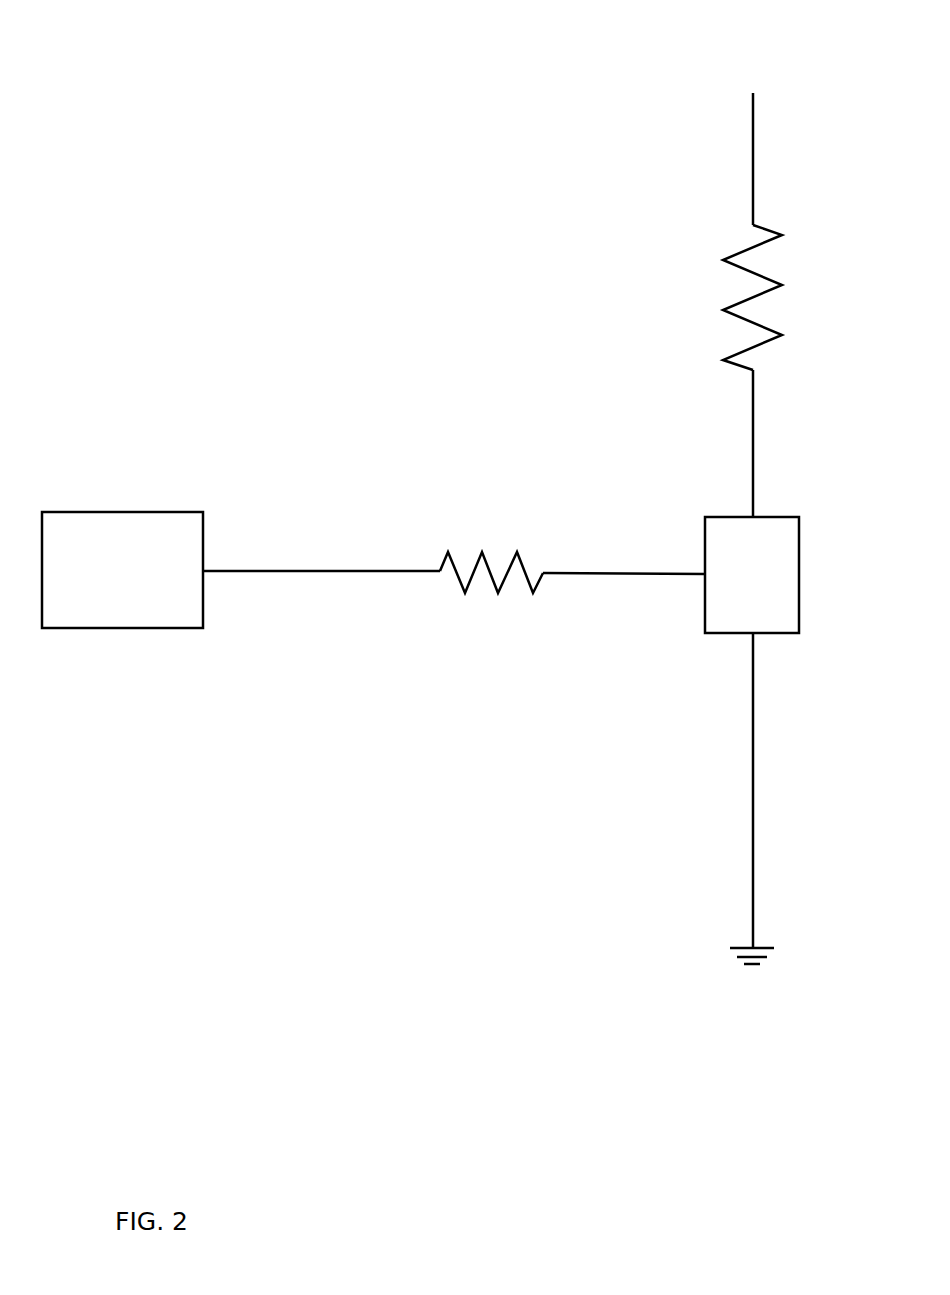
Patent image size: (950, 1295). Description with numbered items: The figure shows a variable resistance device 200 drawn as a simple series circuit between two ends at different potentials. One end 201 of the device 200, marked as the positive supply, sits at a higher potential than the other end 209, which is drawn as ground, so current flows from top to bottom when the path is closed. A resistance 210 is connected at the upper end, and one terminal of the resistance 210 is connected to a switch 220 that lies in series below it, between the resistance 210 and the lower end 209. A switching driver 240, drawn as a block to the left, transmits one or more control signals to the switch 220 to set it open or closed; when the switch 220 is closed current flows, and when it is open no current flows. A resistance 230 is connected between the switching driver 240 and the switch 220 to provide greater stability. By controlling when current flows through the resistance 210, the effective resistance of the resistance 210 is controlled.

The variable resistance device 200 is at (260, 152).
The end of device 201 is at (753, 93).
The another end of device 209 is at (752, 932).
The resistance 210 is at (700, 297).
The switch 220 is at (799, 520).
The resistance 230 is at (497, 530).
The switching driver 240 is at (150, 512).